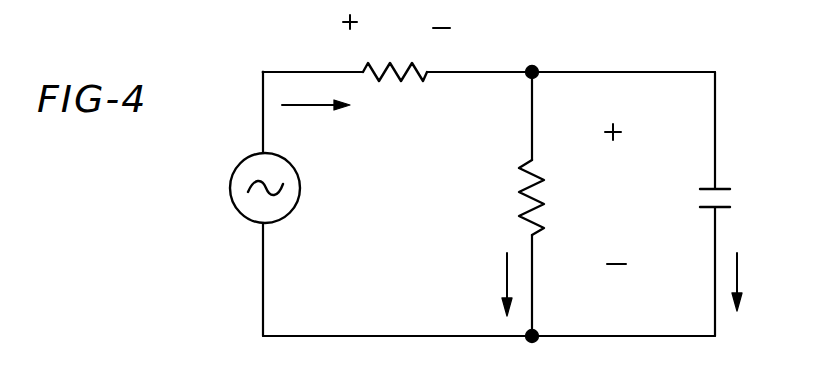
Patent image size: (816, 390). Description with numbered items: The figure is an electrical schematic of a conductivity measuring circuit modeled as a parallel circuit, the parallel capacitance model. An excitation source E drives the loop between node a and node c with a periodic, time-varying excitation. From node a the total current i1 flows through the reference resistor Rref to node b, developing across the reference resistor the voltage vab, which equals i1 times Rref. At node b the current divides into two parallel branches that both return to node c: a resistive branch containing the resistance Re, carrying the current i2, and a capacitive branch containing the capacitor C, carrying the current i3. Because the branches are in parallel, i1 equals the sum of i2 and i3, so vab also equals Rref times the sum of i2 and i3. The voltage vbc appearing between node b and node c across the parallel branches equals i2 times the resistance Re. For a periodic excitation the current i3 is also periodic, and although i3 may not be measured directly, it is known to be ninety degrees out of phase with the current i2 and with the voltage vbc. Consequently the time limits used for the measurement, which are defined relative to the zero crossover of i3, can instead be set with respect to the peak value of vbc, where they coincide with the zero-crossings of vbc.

The node a is at (248, 66).
The node b is at (533, 54).
The node c is at (530, 357).
The AC voltage source E is at (240, 188).
The reference resistor Rref is at (398, 98).
The resistance Re is at (502, 197).
The capacitor C is at (731, 182).
The voltage vab is at (396, 31).
The voltage vbc is at (626, 194).
The current i1 is at (316, 126).
The current i2 is at (490, 284).
The current i3 is at (757, 282).